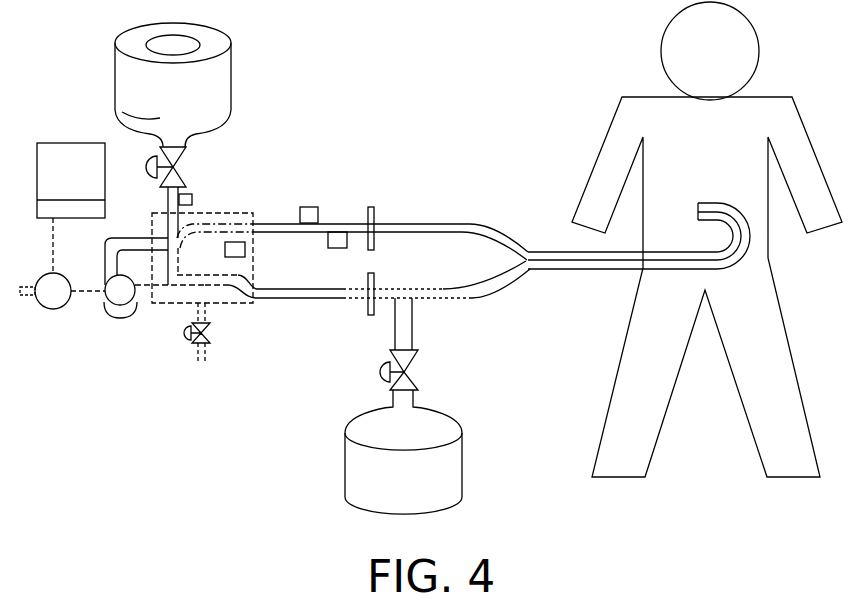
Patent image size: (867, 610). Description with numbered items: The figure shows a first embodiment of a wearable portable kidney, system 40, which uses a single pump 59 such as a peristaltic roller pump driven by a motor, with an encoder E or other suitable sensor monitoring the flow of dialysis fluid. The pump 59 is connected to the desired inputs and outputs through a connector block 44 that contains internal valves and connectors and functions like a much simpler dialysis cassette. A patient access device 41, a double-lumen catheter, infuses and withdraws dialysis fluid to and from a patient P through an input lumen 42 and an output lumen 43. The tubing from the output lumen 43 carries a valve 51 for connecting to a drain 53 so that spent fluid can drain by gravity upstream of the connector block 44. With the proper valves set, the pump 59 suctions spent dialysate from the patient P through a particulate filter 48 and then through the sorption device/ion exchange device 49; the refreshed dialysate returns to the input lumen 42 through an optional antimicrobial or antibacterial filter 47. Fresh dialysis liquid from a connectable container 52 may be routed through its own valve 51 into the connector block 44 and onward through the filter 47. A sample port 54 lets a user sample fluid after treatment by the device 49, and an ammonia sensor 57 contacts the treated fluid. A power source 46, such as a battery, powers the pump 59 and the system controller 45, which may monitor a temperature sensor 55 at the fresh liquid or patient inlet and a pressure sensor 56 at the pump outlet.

The system 40 is at (497, 131).
The patient access device 41 is at (580, 270).
The input lumen 42 is at (505, 240).
The output lumen 43 is at (507, 283).
The connector block 44 is at (236, 306).
The system controller 45 is at (60, 143).
The power source 46 is at (37, 212).
The antimicrobial or antibacterial filter 47 is at (368, 210).
The particulate filter 48 is at (368, 316).
The sorption device/ion exchange device 49 is at (288, 299).
The valve 51 is at (187, 157).
The connectable container 52 is at (232, 78).
The drain 53 is at (462, 462).
The sample port 54 is at (207, 353).
The temperature sensor 55 is at (192, 200).
The pressure sensor 56 is at (306, 207).
The ammonia sensor 57 is at (233, 242).
The pump 59 is at (133, 305).
The encoder E is at (35, 298).
The patient P is at (787, 112).